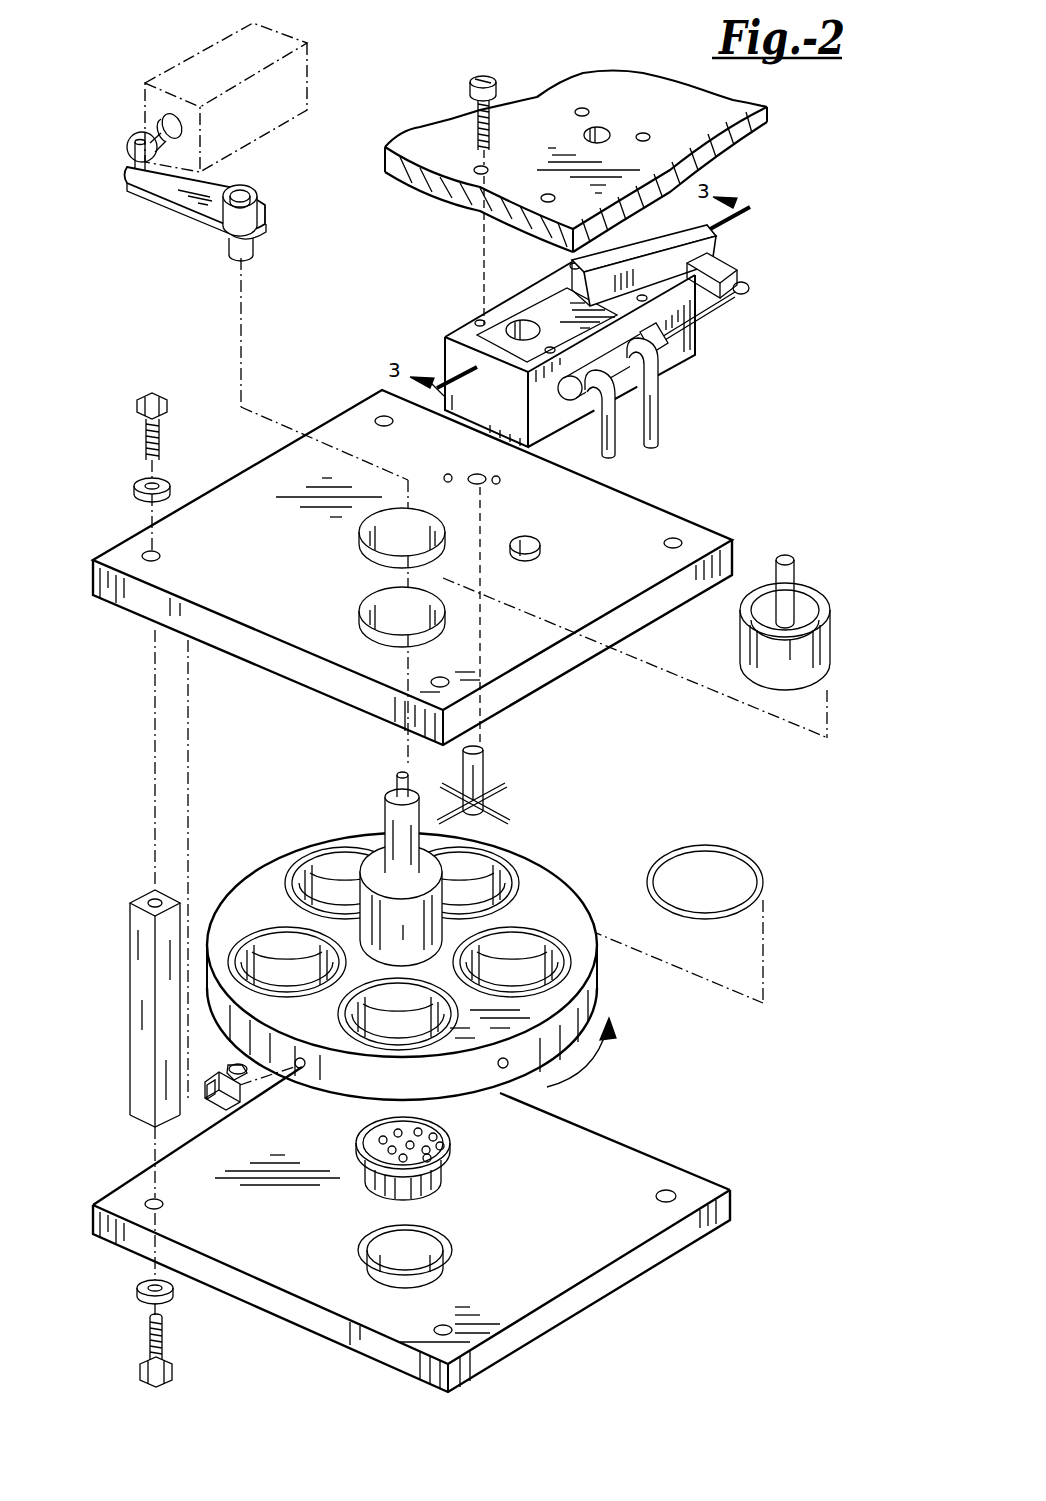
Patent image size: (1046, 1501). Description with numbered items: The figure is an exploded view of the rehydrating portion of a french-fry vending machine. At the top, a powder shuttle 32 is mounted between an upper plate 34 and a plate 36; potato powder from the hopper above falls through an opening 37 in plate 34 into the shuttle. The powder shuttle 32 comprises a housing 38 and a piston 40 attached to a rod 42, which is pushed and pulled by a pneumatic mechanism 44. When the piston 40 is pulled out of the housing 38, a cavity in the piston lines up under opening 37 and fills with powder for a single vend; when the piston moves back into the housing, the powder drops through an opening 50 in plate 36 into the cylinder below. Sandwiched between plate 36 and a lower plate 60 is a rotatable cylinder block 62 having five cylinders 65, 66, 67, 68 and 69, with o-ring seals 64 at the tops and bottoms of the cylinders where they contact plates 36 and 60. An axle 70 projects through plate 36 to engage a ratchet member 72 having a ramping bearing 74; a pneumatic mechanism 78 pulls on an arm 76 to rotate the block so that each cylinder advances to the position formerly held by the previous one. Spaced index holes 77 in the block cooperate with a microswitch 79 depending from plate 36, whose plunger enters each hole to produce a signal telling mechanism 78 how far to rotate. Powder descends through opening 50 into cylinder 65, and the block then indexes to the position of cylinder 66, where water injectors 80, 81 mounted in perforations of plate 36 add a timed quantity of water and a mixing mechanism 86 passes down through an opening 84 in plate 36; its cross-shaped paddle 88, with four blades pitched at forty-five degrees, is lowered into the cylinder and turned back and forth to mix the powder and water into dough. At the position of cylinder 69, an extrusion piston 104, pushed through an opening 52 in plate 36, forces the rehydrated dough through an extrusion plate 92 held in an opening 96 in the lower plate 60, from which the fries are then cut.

The powder shuttle 32 is at (577, 344).
The plate 34 is at (557, 77).
The plate 36 is at (710, 527).
The opening 37 is at (603, 130).
The housing 38 is at (452, 337).
The piston 40 is at (550, 303).
The rod 42 is at (690, 237).
The pneumatic mechanism 44 is at (617, 375).
The opening 50 is at (530, 537).
The opening 52 is at (360, 608).
The lower plate 60 is at (650, 1150).
The rotatable cylinder block 62 is at (602, 975).
The o-ring seals 64 is at (720, 845).
The cylinder 65 is at (527, 950).
The cylinder 66 is at (485, 882).
The cylinder 67 is at (327, 863).
The cylinder 68 is at (282, 947).
The cylinder 69 is at (405, 1037).
The axle 70 is at (380, 813).
The ratchet member 72 is at (172, 213).
The ramping bearing 74 is at (255, 192).
The arm 76 is at (128, 183).
The index holes 77 is at (298, 1070).
The pneumatic mechanism 78 is at (163, 77).
The microswitch 79 is at (217, 1112).
The water injector 80 is at (445, 477).
The water injector 81 is at (502, 479).
The opening 84 is at (458, 508).
The mixing mechanism 86 is at (485, 759).
The cross-shaped paddle 88 is at (497, 802).
The extrusion plate 92 is at (458, 1134).
The opening 96 is at (380, 1243).
The extrusion piston 104 is at (832, 637).